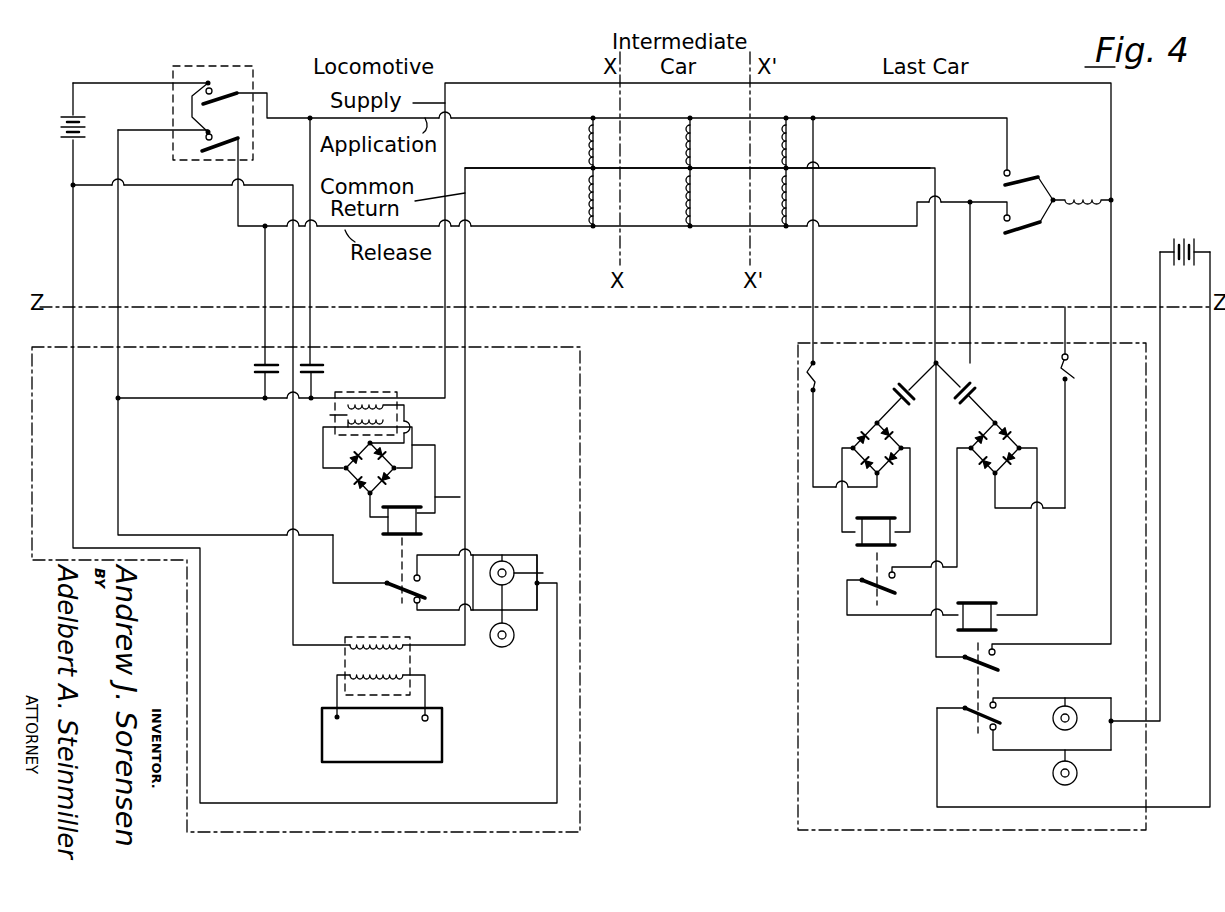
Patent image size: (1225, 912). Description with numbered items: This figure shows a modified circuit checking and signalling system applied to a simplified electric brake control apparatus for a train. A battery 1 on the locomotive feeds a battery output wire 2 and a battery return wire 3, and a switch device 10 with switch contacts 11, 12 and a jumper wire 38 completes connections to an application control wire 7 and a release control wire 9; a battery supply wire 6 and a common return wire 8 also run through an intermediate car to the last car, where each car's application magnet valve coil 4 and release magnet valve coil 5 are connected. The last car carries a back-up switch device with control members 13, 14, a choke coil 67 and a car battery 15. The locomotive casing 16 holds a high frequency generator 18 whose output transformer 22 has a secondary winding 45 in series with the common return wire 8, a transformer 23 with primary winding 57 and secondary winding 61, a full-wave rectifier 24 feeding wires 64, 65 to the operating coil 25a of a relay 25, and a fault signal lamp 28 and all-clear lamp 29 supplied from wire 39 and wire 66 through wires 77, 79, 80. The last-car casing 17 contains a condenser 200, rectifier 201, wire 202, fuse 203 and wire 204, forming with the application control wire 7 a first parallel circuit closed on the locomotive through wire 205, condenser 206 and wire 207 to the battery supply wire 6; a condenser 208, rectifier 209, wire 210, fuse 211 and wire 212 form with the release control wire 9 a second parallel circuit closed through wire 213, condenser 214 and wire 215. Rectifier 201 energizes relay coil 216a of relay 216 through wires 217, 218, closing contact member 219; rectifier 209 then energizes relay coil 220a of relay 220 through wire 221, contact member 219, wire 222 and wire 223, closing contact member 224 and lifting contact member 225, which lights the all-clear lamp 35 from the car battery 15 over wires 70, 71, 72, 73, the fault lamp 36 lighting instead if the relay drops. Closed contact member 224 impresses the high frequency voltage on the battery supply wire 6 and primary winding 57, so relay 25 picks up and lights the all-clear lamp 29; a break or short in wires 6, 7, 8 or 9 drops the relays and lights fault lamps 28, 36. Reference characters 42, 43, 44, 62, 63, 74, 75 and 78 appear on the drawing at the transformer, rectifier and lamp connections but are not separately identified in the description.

The battery 1 is at (55, 122).
The battery output wire 2 is at (145, 83).
The battery return wire 3 is at (77, 263).
The application magnet valve coil 4 is at (585, 147).
The release magnet valve coil 5 is at (585, 198).
The battery supply wire 6 is at (526, 80).
The application control wire 7 is at (270, 107).
The common return wire 8 is at (88, 190).
The release control wire 9 is at (238, 200).
The switch device 10 is at (232, 66).
The switch contact 11 is at (224, 100).
The switch contact 12 is at (234, 152).
The control member 13 is at (1030, 192).
The control member 14 is at (1028, 231).
The car battery 15 is at (1180, 242).
The casing 16 is at (581, 416).
The casing 17 is at (798, 487).
The high frequency generator 18 is at (322, 738).
The output transformer 22 is at (352, 637).
The transformer 23 is at (394, 392).
The full-wave rectifier 24 is at (370, 468).
The relay 25 is at (414, 574).
The operating coil 25a is at (418, 536).
The fault signal lamp 28 is at (515, 629).
The all-clear lamp 29 is at (542, 575).
The all-clear lamp 35 is at (1053, 717).
The fault lamp 36 is at (1053, 779).
The jumper wire 38 is at (192, 105).
The wire 39 is at (120, 294).
The coil winding 42 is at (365, 668).
The wire 43 is at (337, 690).
The wire 44 is at (427, 690).
The secondary winding 45 is at (391, 625).
The primary winding 57 is at (398, 424).
The secondary winding 61 is at (323, 421).
The wire 62 is at (323, 440).
The wire 63 is at (408, 452).
The wire 64 is at (370, 506).
The wire 65 is at (460, 497).
The wire 66 is at (343, 559).
The choke coil 67 is at (1097, 195).
The wire 70 is at (1210, 428).
The wire 71 is at (1035, 698).
The wire 72 is at (1105, 698).
The wire 73 is at (1163, 353).
The wire 74 is at (1007, 752).
The wire 75 is at (1104, 752).
The wire 77 is at (494, 546).
The wire 78 is at (541, 546).
The wire 79 is at (443, 601).
The wire 80 is at (514, 617).
The condenser 200 is at (890, 384).
The rectifier 201 is at (877, 448).
The wire 202 is at (818, 428).
The fuse 203 is at (818, 372).
The wire 204 is at (818, 278).
The wire 205 is at (313, 282).
The condenser 206 is at (322, 369).
The wire 207 is at (322, 386).
The condenser 208 is at (978, 382).
The rectifier 209 is at (995, 448).
The wire 210 is at (1003, 508).
The fuse 211 is at (1085, 407).
The wire 212 is at (973, 278).
The wire 213 is at (263, 291).
The condenser 214 is at (255, 368).
The wire 215 is at (262, 385).
The relay 216 is at (892, 526).
The relay coil 216a is at (893, 540).
The wire 217 is at (842, 528).
The wire 218 is at (910, 514).
The contact member 219 is at (852, 590).
The relay 220 is at (946, 688).
The relay coil 220a is at (990, 596).
The wire 221 is at (960, 548).
The wire 222 is at (860, 617).
The wire 223 is at (1040, 548).
The contact member 224 is at (1000, 663).
The contact member 225 is at (1024, 724).